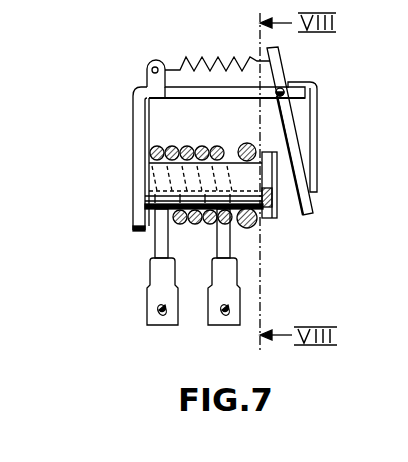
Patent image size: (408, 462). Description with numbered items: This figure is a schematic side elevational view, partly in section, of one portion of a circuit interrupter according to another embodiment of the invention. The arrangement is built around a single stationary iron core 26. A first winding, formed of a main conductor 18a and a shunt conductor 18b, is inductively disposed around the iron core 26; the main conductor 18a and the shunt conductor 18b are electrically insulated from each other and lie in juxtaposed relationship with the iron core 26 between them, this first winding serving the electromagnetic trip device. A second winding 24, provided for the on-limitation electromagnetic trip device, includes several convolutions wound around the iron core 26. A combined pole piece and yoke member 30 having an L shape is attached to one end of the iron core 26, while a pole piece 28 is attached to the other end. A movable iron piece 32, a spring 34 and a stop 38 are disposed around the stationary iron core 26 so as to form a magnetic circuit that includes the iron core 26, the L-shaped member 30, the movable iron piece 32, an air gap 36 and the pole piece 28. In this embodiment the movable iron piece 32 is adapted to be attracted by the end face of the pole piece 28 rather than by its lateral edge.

The main conductor 18a is at (256, 147).
The shunt conductor 18b is at (250, 228).
The second winding 24 is at (163, 147).
The stationary iron core 26 is at (157, 178).
The pole piece 28 is at (273, 213).
The combined pole piece and yoke member 30 is at (145, 210).
The movable iron piece 32 is at (290, 113).
The spring 34 is at (217, 57).
The air gap 36 is at (289, 207).
The stop 38 is at (312, 82).